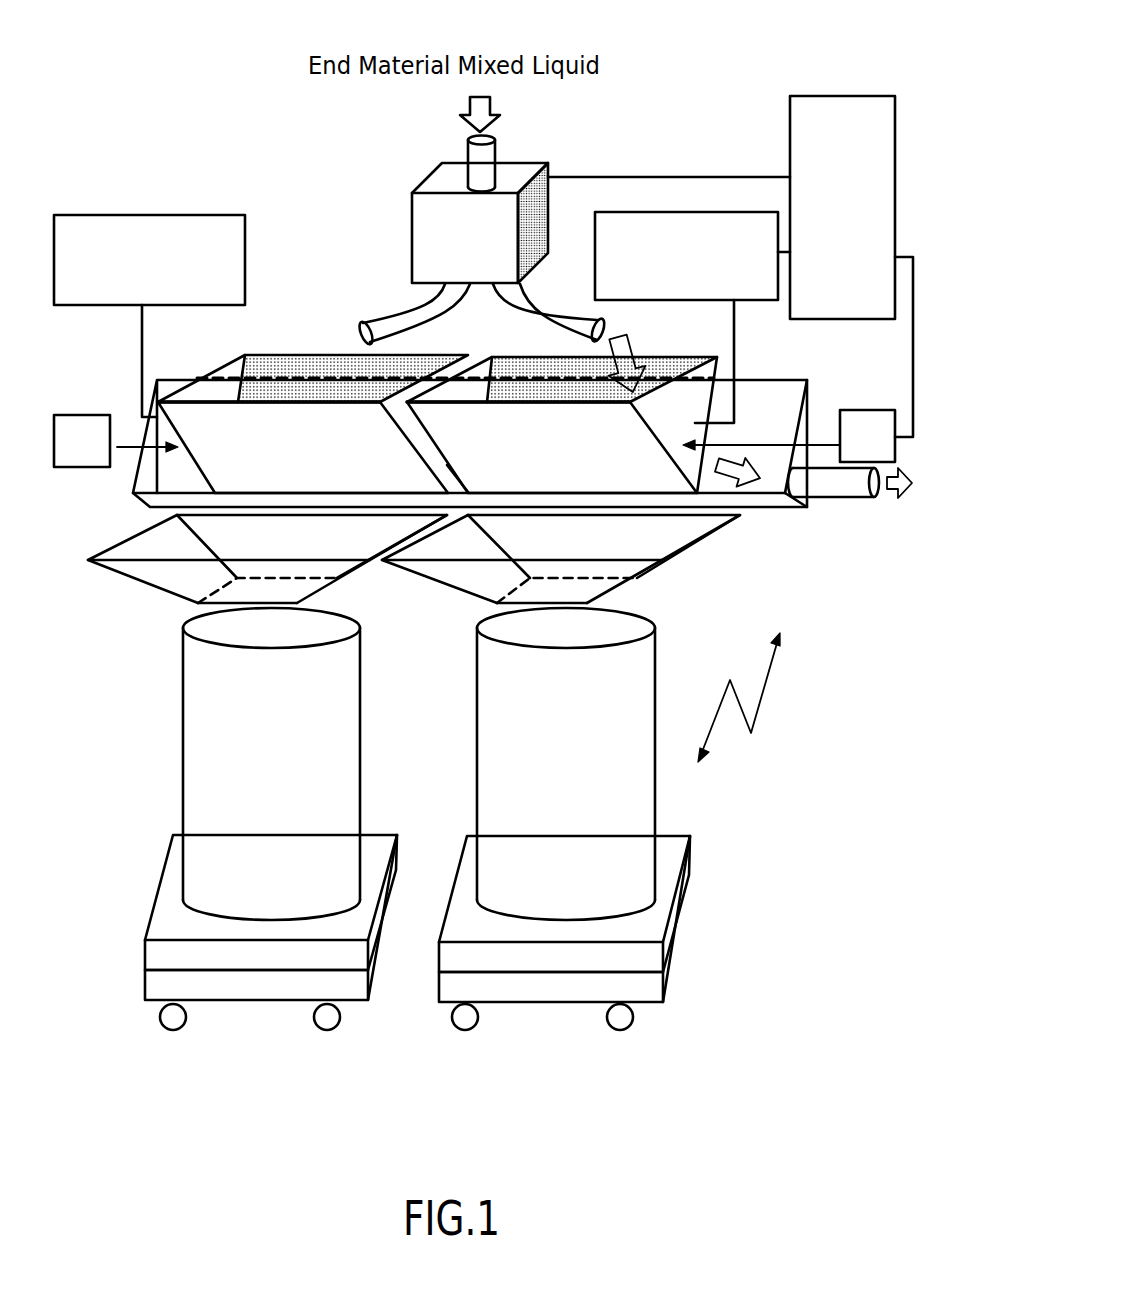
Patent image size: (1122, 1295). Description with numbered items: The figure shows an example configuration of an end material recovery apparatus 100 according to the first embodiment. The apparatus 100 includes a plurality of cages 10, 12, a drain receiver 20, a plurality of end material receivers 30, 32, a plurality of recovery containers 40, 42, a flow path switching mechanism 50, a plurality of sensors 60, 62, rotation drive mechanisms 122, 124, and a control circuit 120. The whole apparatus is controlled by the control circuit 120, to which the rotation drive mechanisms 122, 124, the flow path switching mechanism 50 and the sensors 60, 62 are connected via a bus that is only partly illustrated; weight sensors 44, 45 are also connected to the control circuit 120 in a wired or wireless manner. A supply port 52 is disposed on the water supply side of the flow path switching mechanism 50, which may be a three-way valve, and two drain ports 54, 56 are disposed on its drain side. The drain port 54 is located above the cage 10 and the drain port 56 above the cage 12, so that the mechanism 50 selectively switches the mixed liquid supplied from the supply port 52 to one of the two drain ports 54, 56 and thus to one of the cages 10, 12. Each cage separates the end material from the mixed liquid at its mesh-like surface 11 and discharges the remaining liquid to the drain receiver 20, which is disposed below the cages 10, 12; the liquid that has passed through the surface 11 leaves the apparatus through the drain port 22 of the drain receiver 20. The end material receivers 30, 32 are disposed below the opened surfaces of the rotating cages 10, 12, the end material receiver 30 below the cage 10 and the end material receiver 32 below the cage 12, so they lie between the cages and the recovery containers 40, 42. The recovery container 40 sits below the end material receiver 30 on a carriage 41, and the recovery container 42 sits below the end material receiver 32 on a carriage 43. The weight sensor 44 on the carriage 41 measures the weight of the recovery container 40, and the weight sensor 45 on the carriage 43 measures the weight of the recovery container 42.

The end material recovery apparatus 100 is at (745, 50).
The cage 10 is at (232, 362).
The surface 11 is at (300, 357).
The cage 12 is at (720, 362).
The drain receiver 20 is at (810, 402).
The drain port 22 is at (823, 500).
The end material receiver 30 is at (158, 588).
The end material receiver 32 is at (467, 595).
The recovery container 40 is at (182, 700).
The carriage 41 is at (239, 940).
The recovery container 42 is at (476, 700).
The carriage 43 is at (533, 943).
The weight sensor 44 is at (145, 960).
The weight sensor 45 is at (438, 965).
The flow path switching mechanism 50 is at (412, 236).
The supply port 52 is at (468, 146).
The drain port 54 is at (392, 306).
The drain port 56 is at (535, 302).
The sensor 60 is at (95, 413).
The sensor 62 is at (890, 408).
The control circuit 120 is at (897, 208).
The rotation drive mechanism 122 is at (145, 213).
The rotation drive mechanism 124 is at (667, 211).